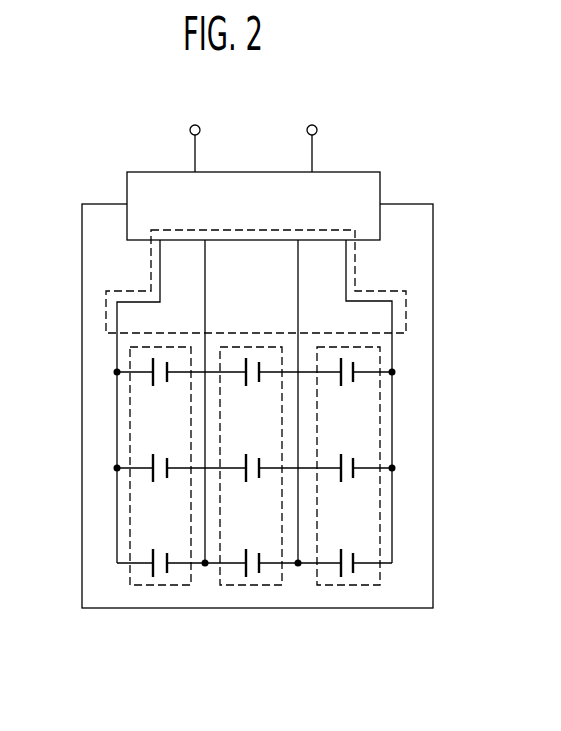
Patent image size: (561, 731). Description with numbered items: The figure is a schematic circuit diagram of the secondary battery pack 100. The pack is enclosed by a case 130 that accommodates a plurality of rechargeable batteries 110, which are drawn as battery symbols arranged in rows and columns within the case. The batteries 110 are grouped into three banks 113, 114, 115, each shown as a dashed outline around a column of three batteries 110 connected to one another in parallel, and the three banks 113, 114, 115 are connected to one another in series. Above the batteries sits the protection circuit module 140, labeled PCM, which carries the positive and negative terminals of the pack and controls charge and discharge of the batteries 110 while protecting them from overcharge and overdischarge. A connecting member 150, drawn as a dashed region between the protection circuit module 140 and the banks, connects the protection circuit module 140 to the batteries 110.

The secondary battery pack 100 is at (92, 136).
The rechargeable battery 110 is at (358, 459).
The bank 113 is at (160, 585).
The bank 114 is at (258, 585).
The bank 115 is at (417, 514).
The case 130 is at (434, 379).
The protection circuit module 140 is at (380, 182).
The connecting member 150 is at (406, 310).